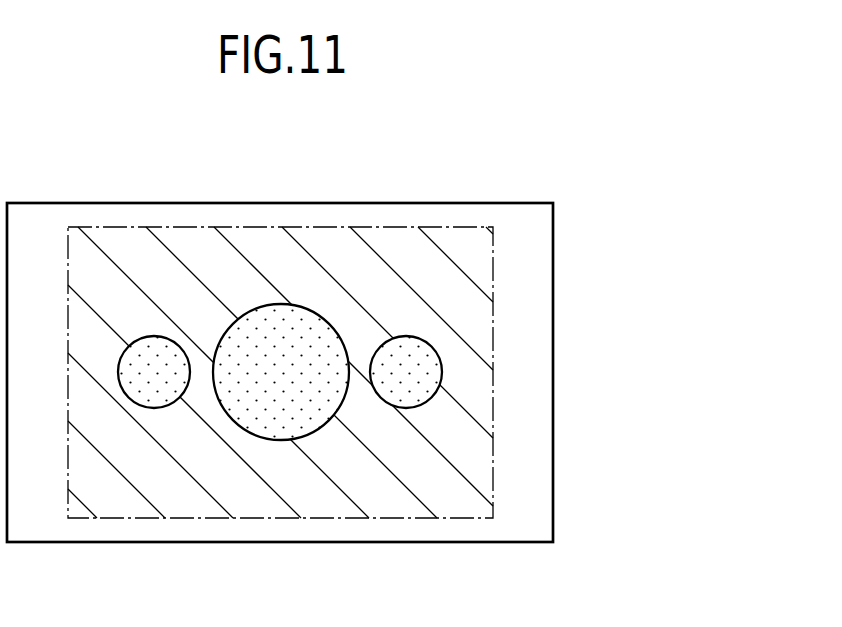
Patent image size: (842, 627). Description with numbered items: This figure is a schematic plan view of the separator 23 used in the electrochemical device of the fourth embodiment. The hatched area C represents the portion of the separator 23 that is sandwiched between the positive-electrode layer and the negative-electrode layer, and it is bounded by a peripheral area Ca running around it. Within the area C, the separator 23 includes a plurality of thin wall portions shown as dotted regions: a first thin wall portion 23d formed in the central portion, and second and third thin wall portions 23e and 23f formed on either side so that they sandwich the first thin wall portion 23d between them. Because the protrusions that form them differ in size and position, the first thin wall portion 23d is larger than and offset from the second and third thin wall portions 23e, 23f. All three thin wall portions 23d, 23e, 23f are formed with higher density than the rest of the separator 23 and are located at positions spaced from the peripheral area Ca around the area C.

The separator 23 is at (513, 203).
The first thin wall portion 23d is at (287, 305).
The second thin wall portion 23e is at (137, 406).
The third thin wall portion 23f is at (387, 407).
The area C is at (243, 480).
The peripheral area Ca is at (315, 518).